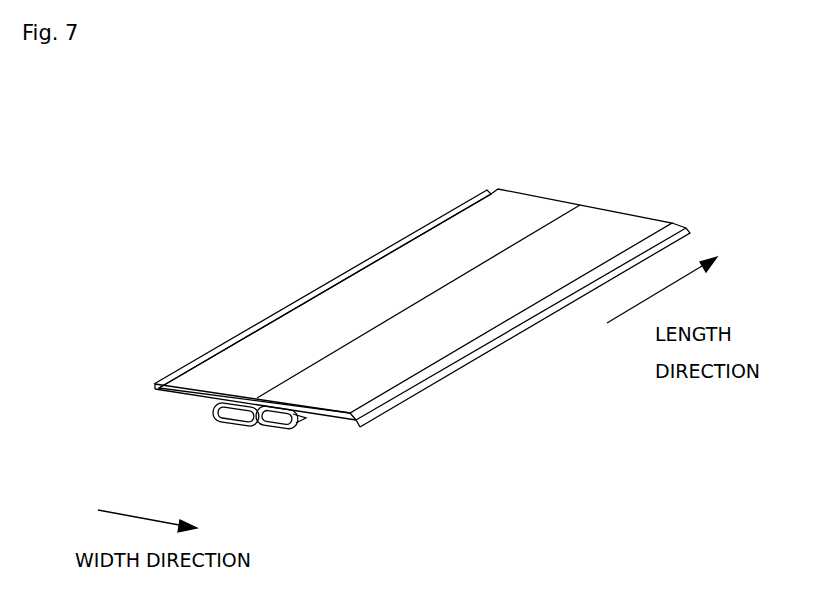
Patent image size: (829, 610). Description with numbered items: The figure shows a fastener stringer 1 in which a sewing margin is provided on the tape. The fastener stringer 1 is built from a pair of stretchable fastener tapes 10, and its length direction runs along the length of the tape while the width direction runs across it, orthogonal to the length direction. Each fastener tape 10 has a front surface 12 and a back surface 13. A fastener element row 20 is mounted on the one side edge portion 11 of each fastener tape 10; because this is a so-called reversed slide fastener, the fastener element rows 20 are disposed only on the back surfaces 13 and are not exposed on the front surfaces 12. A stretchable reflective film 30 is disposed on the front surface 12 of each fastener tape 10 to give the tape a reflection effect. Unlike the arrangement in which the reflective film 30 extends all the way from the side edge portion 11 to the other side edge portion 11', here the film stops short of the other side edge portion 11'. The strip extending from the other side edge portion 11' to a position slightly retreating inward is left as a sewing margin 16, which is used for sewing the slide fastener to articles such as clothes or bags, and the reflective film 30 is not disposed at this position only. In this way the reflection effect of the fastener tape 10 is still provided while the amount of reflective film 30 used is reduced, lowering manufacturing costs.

The fastener stringer 1 is at (144, 128).
The fastener tape 10 is at (160, 390).
The side edge portion 11 is at (418, 292).
The other side edge portion 11' is at (448, 290).
The front surface 12 is at (186, 388).
The back surface 13 is at (187, 393).
The sewing margin 16 is at (255, 322).
The fastener element row 20 is at (221, 422).
The reflective film 30 is at (498, 208).